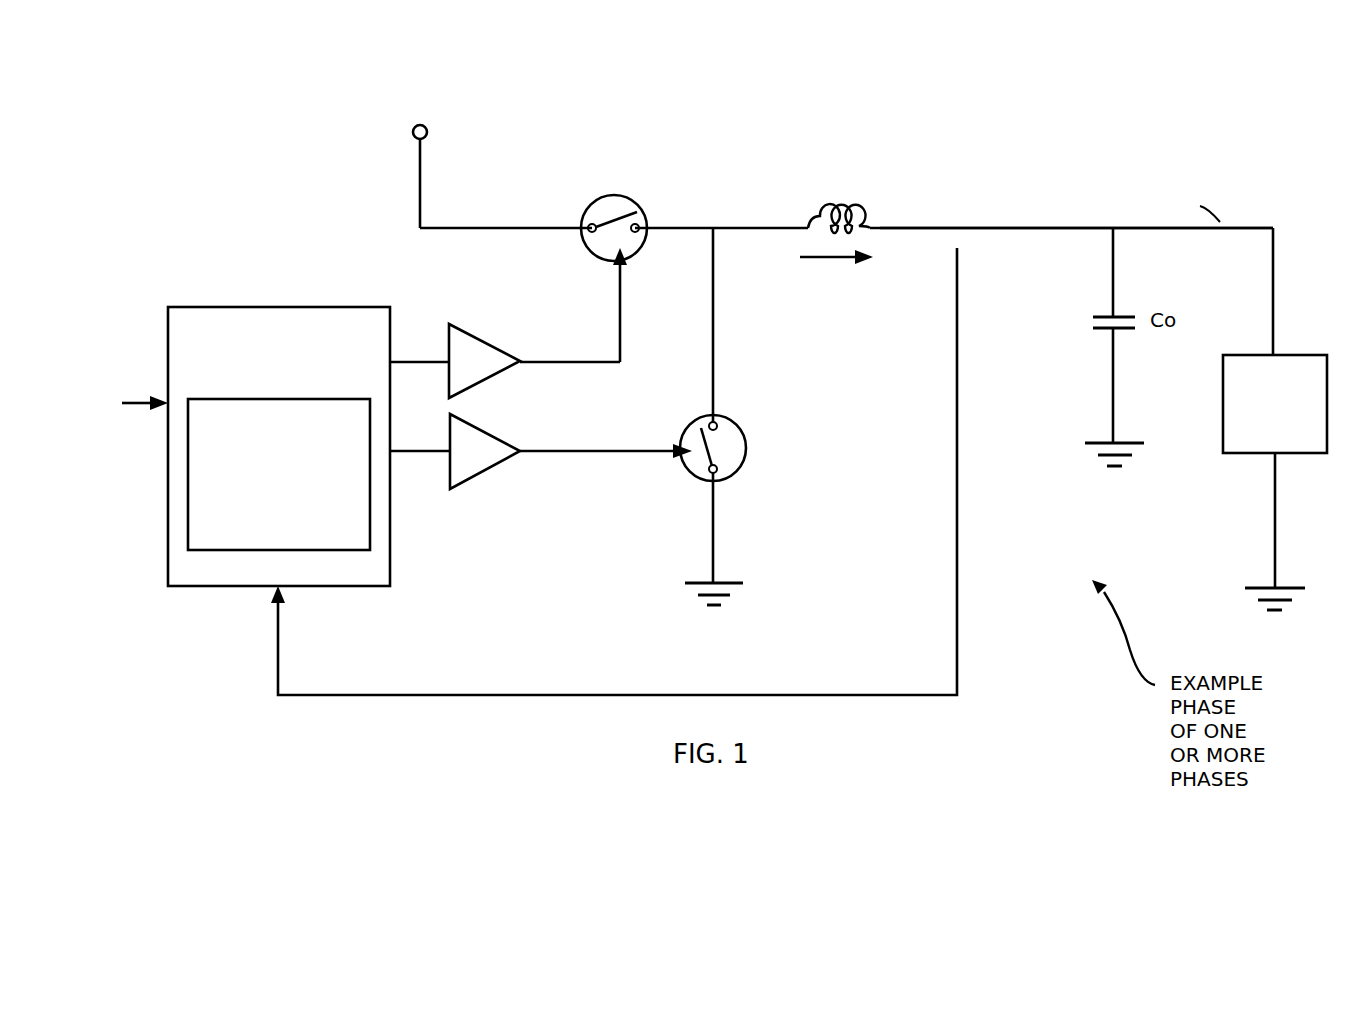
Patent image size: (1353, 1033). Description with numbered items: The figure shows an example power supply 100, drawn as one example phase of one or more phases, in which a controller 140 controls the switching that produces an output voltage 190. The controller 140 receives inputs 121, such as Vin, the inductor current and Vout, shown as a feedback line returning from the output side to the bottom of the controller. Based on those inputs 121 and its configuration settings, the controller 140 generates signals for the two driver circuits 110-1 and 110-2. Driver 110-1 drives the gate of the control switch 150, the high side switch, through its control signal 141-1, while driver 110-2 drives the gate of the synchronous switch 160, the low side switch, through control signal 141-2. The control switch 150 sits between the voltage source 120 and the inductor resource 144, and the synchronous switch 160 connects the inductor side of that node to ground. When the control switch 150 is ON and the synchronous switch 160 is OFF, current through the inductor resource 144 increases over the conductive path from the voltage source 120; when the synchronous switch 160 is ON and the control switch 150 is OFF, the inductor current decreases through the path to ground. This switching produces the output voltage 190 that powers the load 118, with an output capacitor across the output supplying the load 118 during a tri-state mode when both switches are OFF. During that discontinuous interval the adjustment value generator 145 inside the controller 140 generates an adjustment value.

The power supply 100 is at (837, 71).
The voltage source 120 is at (366, 150).
The controller 140 is at (300, 369).
The adjustment value generator 145 is at (300, 528).
The driver 110-1 is at (484, 337).
The driver 110-2 is at (486, 482).
The control signal to high-side switch 141-1 is at (603, 377).
The control signal to low-side switch 141-2 is at (604, 477).
The control switch 150 is at (617, 193).
The synchronous switch 160 is at (748, 450).
The inductor resource 144 is at (843, 208).
The output voltage 190 is at (990, 228).
The load 118 is at (1293, 427).
The inputs 121 is at (270, 626).